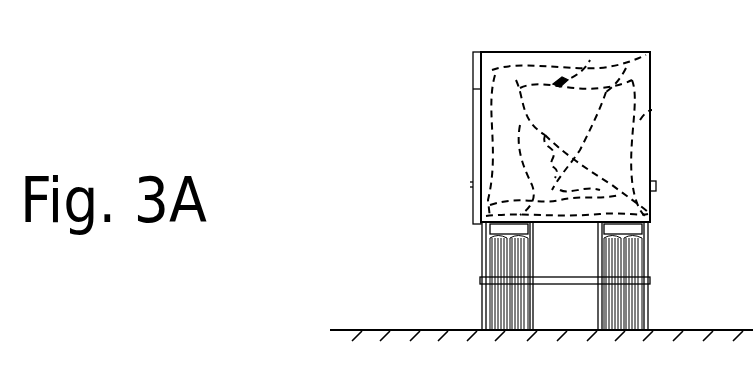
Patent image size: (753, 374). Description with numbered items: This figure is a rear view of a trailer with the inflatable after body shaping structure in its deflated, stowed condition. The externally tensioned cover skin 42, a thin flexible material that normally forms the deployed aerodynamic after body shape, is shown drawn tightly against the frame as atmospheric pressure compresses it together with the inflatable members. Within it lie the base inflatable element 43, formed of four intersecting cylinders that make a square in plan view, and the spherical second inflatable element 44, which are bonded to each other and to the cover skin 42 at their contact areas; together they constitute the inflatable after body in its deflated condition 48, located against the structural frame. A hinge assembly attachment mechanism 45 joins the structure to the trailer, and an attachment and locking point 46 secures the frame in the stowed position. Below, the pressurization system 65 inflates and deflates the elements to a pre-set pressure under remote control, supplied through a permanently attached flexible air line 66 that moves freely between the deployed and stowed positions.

The externally tensioned cover skin 42 is at (634, 92).
The base inflatable element 43 is at (628, 131).
The second inflatable element 44 is at (632, 164).
The hinge assembly attachment mechanism 45 is at (473, 89).
The attachment and locking point 46 is at (657, 187).
The inflatable after body in deflated condition 48 is at (560, 82).
The pressurization system 65 is at (504, 231).
The flexible air line 66 is at (483, 226).